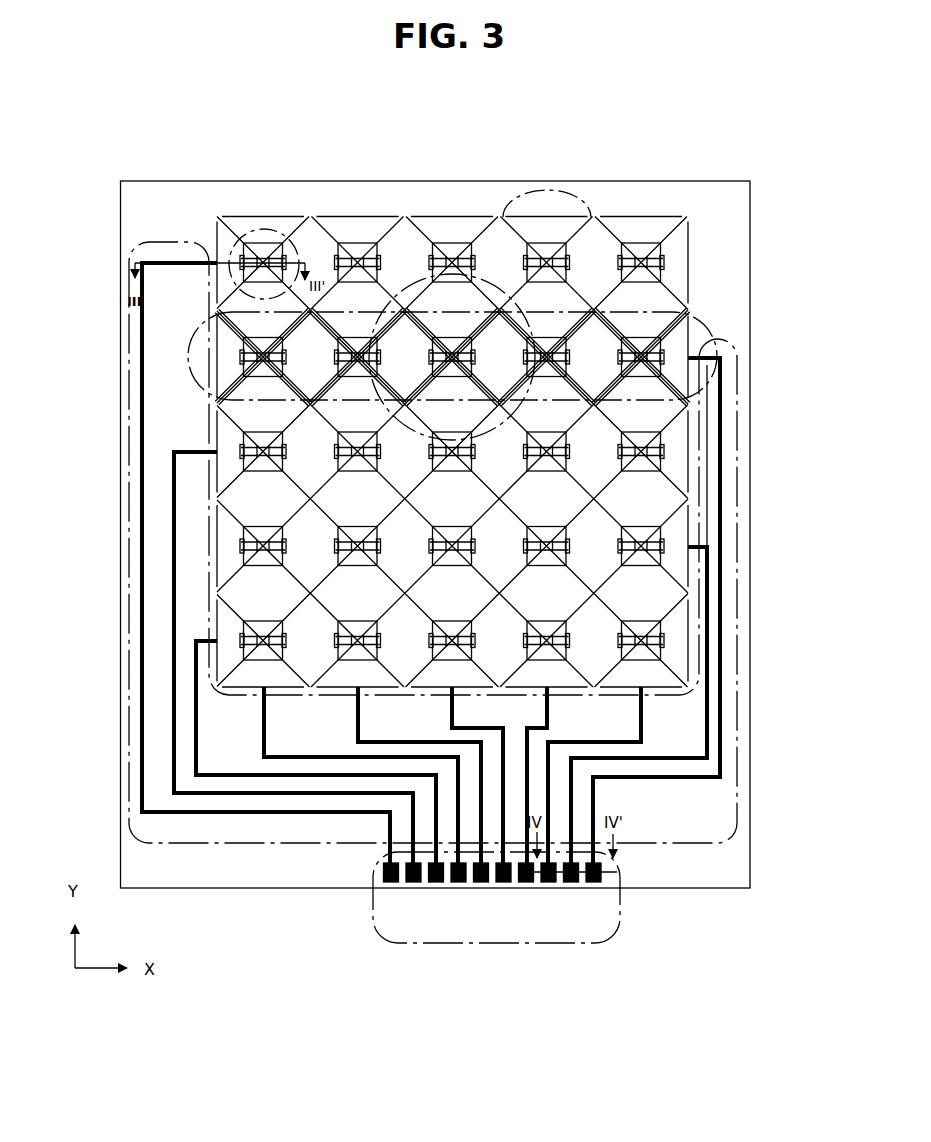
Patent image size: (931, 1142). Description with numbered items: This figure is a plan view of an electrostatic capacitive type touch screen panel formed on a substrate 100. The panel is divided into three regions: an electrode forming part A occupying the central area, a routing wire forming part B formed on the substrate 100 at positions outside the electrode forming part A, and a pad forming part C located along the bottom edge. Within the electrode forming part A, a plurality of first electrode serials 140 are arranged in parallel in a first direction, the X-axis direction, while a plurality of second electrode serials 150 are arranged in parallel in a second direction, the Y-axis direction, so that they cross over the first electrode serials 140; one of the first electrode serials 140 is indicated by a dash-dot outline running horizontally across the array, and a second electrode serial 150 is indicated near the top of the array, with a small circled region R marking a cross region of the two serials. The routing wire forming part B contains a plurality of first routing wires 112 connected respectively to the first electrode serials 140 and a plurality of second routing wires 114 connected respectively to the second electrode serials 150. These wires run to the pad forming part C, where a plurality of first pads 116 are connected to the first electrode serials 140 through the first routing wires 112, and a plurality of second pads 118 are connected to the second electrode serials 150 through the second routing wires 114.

The substrate 100 is at (738, 862).
The first routing wires 112 is at (141, 362).
The second routing wires 114 is at (266, 721).
The first pads 116 is at (443, 884).
The second pads 118 is at (555, 884).
The first electrode serials 140 is at (703, 323).
The second electrode serials 150 is at (548, 192).
The electrode forming part A is at (446, 200).
The routing wire forming part B is at (738, 795).
The pad forming part C is at (464, 944).
The enlarged region R is at (262, 230).